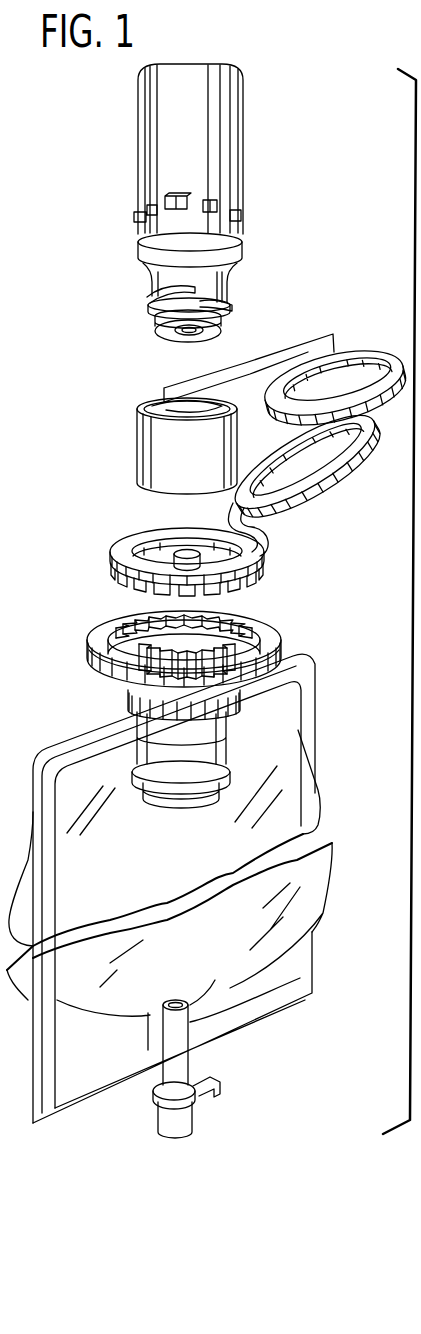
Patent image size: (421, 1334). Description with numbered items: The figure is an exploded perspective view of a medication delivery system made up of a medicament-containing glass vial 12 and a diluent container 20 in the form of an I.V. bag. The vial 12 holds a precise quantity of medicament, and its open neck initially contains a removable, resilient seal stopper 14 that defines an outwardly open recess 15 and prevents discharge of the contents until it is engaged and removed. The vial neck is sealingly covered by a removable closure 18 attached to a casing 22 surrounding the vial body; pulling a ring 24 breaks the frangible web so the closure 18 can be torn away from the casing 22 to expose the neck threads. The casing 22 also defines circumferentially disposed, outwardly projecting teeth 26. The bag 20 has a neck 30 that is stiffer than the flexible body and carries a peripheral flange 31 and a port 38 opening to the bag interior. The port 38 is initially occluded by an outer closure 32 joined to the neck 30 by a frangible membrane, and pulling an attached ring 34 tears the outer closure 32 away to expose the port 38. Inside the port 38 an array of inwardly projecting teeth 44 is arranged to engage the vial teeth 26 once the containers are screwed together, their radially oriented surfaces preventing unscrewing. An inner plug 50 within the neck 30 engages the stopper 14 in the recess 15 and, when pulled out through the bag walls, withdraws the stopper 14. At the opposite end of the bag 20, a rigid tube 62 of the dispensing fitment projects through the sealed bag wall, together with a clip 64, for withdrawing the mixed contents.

The glass vial 12 is at (190, 165).
The casing 22 is at (233, 97).
The teeth 26 is at (150, 204).
The seal plug or stopper 14 is at (185, 316).
The recess 15 is at (188, 340).
The closure 18 is at (112, 427).
The ring 24 is at (388, 352).
The ring 34 is at (317, 487).
The outer closure 32 is at (282, 557).
The port 38 is at (236, 637).
The peripheral flange 31 is at (174, 625).
The teeth 44 is at (143, 644).
The neck 30 is at (198, 695).
The diluent container 20 is at (334, 652).
The inner plug 50 is at (158, 806).
The tube 62 is at (172, 1071).
The tube clip 64 is at (210, 1120).